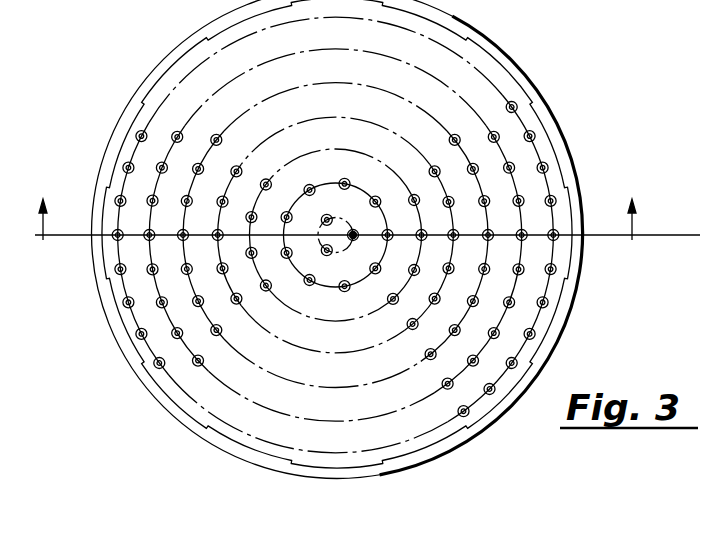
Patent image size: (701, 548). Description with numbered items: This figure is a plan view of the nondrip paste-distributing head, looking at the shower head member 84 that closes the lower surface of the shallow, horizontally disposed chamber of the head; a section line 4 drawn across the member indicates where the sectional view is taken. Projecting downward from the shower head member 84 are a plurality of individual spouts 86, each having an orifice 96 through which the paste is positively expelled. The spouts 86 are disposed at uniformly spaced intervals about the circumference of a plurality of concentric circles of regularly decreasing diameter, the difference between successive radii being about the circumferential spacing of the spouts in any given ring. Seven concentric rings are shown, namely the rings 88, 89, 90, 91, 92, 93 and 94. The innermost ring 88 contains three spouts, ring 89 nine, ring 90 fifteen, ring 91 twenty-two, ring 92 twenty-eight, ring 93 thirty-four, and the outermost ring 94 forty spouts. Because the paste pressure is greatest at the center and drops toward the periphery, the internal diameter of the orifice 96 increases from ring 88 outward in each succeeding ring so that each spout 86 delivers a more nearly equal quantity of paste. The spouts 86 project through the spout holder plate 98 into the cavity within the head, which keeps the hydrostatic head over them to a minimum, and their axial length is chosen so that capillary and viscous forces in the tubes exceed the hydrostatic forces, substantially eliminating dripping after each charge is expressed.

The section line 4- 4 is at (60, 200).
The shower head member 84 is at (562, 287).
The spouts 86 is at (137, 132).
The innermost ring 88 is at (340, 207).
The second ring 89 is at (392, 230).
The third ring 90 is at (420, 243).
The fourth ring 91 is at (452, 236).
The fifth ring 92 is at (488, 240).
The sixth ring 93 is at (541, 304).
The outermost ring 94 is at (522, 347).
The orifices 96 is at (379, 200).
The spout holder plate 98 is at (533, 131).